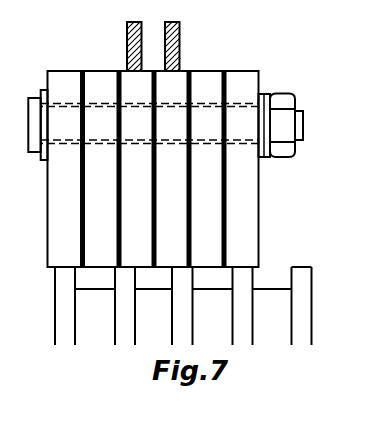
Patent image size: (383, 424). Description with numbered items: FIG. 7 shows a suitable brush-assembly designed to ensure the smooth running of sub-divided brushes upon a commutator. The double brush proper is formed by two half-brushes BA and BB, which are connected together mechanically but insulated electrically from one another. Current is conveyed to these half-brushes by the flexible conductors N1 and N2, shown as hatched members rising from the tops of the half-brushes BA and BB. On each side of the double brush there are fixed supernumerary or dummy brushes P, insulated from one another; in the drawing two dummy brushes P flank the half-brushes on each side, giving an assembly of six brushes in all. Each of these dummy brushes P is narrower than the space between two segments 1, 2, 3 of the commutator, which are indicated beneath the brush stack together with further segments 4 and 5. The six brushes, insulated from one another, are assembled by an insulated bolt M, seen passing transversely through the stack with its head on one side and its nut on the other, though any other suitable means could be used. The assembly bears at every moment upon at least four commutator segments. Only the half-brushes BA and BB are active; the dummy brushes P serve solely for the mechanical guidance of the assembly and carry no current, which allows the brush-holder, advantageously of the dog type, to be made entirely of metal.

The flexible conductor N1 is at (127, 38).
The flexible conductor N2 is at (180, 38).
The insulated bolt M is at (303, 127).
The dummy brush P is at (150, 169).
The half-brush BA is at (136, 169).
The half-brush BB is at (171, 169).
The commutator segment 1 is at (85, 306).
The commutator segment 2 is at (143, 306).
The commutator segment 3 is at (202, 306).
The commutator segment 4 is at (262, 306).
The commutator segment 5 is at (302, 306).